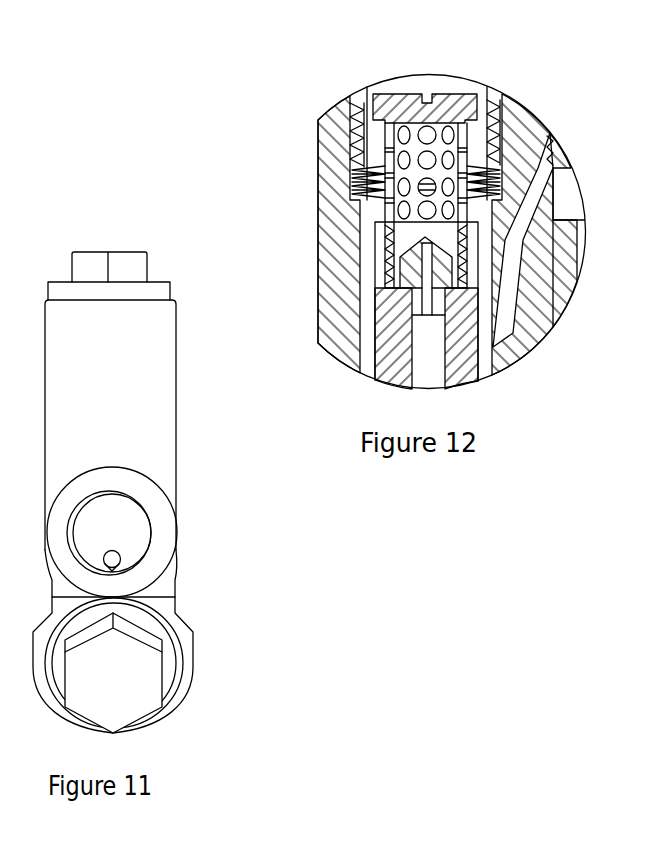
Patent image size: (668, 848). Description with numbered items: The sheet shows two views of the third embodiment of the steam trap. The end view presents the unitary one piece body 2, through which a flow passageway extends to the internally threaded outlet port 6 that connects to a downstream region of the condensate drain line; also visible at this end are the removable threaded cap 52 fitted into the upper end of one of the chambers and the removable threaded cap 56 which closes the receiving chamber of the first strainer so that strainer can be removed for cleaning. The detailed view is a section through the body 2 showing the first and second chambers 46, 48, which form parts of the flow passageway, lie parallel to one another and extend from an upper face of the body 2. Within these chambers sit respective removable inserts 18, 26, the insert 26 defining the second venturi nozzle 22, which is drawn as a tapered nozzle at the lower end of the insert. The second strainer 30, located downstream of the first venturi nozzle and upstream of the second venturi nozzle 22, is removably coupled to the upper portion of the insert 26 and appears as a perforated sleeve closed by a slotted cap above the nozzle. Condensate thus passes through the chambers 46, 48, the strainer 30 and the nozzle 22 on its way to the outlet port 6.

In FIG. 11, the body 2 is at (165, 445).
In FIG. 12, the body 2 is at (540, 335).
In FIG. 11, the outlet port 6 is at (140, 540).
In FIG. 12, the removable insert 18 is at (567, 283).
In FIG. 12, the second venturi nozzle 22 is at (421, 312).
In FIG. 12, the removable insert 26 is at (470, 380).
In FIG. 12, the second strainer 30 is at (457, 107).
In FIG. 12, the first chamber 46 is at (575, 196).
In FIG. 12, the second chamber 48 is at (365, 218).
In FIG. 11, the removable threaded cap 52 is at (135, 262).
In FIG. 11, the removable threaded cap 56 is at (145, 693).